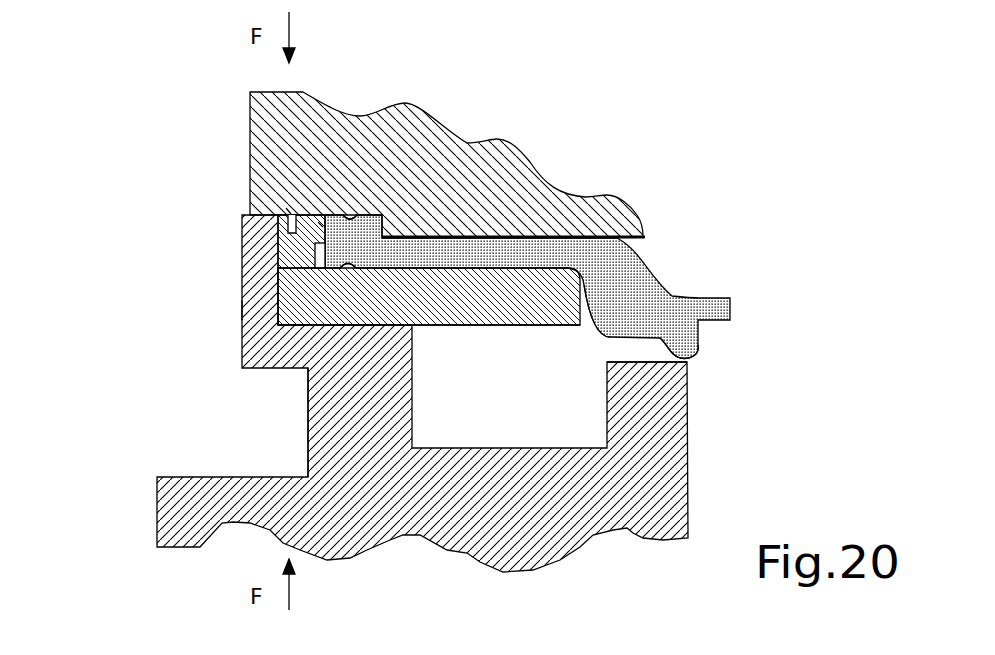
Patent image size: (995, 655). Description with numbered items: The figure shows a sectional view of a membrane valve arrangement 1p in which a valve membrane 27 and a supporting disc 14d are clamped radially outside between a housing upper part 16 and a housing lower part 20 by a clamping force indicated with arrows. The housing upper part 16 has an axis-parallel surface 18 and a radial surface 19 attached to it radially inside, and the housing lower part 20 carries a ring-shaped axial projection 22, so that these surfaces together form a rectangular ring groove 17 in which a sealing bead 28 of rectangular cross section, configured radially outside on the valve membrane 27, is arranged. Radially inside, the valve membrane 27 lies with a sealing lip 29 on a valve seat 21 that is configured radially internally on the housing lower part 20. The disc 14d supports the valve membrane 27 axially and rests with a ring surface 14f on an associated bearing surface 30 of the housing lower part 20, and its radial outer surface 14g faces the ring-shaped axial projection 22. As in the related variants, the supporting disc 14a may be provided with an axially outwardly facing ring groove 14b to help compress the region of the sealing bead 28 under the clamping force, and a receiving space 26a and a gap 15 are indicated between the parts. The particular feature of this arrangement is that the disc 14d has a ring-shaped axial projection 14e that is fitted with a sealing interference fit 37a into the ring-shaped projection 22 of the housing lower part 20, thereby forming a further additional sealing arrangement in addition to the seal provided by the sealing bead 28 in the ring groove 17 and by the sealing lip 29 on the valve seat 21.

The membrane valve arrangement 1p is at (755, 130).
The housing upper part 16 is at (632, 202).
The valve membrane 27 is at (672, 287).
The sealing lip 29 is at (695, 350).
The valve seat 21 is at (650, 363).
The housing lower part 20 is at (688, 461).
The disc 14a is at (352, 218).
The axis-parallel surface 18 is at (323, 227).
The sealing bead 28 is at (290, 213).
The ring groove 17 is at (287, 209).
The radial surface 19 is at (284, 218).
The ring-shaped axial projection 14e is at (290, 246).
The gap 26a is at (300, 263).
The sealing interference fit 37a is at (279, 278).
The radial outer surface 14g is at (278, 288).
The ring-shaped axial projection 22 is at (253, 308).
The ring groove 14b is at (335, 326).
The ring surface 14f is at (308, 392).
The bearing surface 30 is at (350, 268).
The disc 14d is at (487, 326).
The labyrinth gap 15 is at (585, 322).